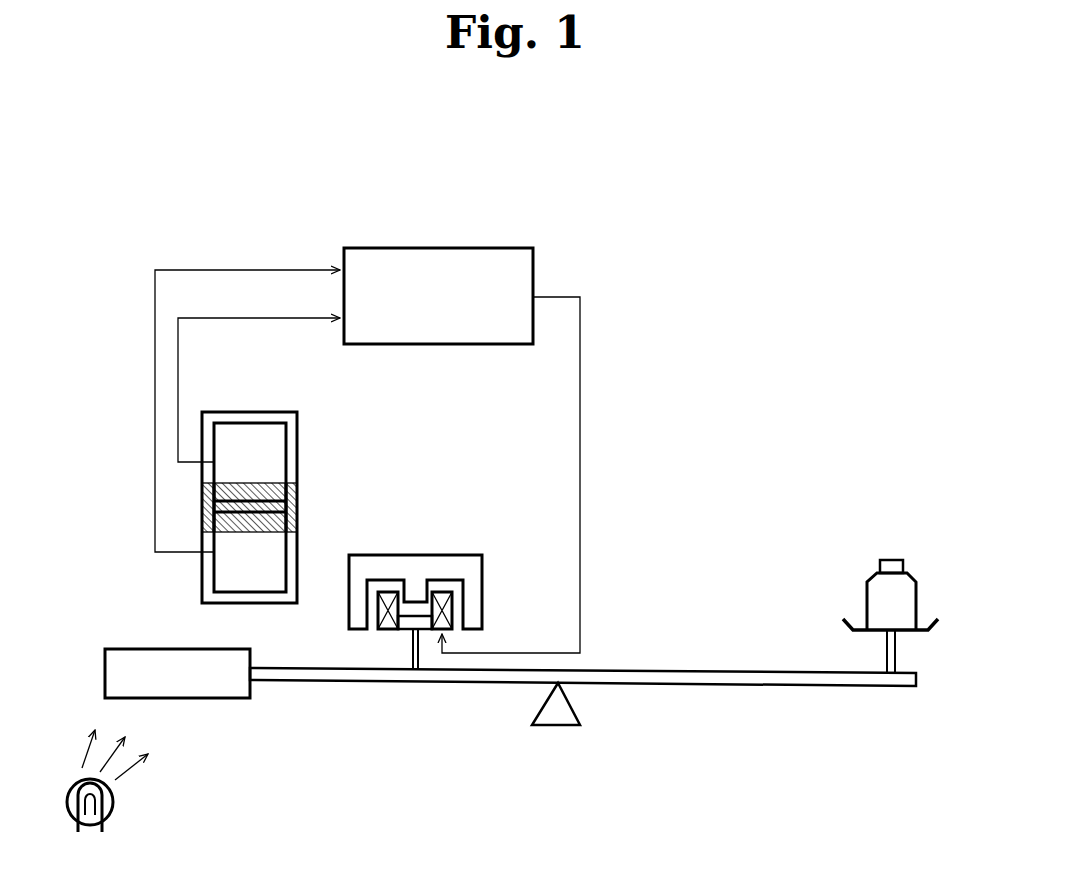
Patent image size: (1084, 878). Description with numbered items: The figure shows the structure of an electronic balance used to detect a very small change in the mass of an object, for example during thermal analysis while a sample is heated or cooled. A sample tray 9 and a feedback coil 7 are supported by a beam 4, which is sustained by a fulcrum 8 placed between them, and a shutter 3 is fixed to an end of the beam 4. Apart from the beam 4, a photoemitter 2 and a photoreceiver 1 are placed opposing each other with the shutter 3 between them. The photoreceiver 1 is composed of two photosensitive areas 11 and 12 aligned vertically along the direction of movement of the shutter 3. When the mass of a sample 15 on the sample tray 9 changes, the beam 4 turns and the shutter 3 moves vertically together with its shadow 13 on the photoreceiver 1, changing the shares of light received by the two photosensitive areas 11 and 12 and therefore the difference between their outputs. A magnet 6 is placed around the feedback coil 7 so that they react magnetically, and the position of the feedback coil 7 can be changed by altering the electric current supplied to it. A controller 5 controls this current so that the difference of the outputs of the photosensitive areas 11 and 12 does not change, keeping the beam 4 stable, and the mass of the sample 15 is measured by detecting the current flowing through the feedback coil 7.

The photoreceiver 1 is at (252, 413).
The photoemitter 2 is at (115, 803).
The shutter 3 is at (218, 699).
The beam 4 is at (701, 670).
The controller 5 is at (443, 252).
The magnet 6 is at (419, 557).
The feedback coil 7 is at (442, 603).
The fulcrum 8 is at (558, 727).
The sample tray 9 is at (845, 626).
The photosensitive area 11 is at (225, 438).
The photosensitive area 12 is at (225, 570).
The shadow 13 is at (298, 513).
The sample 15 is at (886, 561).